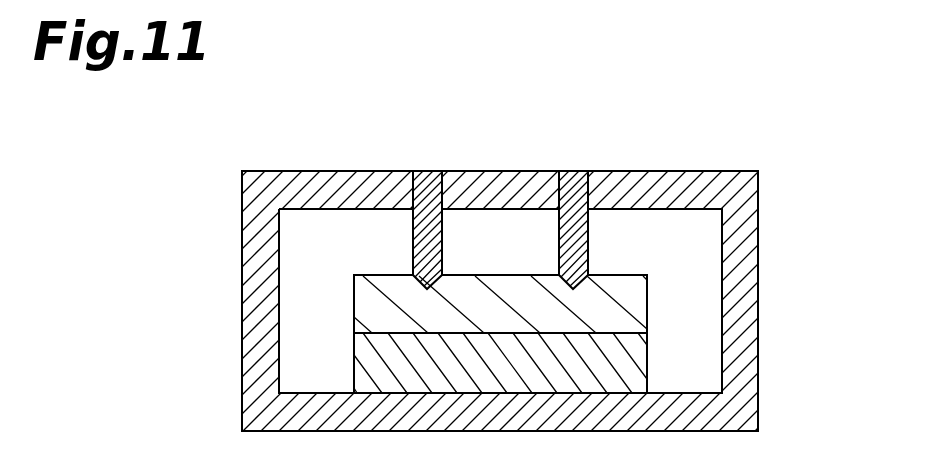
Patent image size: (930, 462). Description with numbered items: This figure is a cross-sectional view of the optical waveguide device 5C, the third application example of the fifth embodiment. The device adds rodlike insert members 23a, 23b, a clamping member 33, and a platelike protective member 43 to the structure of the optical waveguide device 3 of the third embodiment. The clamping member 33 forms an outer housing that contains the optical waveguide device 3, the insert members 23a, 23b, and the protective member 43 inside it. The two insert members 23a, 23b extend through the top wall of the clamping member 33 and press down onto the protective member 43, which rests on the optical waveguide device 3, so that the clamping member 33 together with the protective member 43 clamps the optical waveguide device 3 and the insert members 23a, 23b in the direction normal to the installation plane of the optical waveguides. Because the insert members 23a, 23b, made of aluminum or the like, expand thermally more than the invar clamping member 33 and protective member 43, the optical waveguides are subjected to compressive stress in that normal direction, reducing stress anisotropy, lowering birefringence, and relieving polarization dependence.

The optical waveguide device 5C is at (635, 157).
The clamping member 33 is at (755, 195).
The insert member 23a is at (425, 171).
The insert member 23b is at (572, 171).
The protective member 43 is at (637, 312).
The optical waveguide device 3 is at (645, 368).